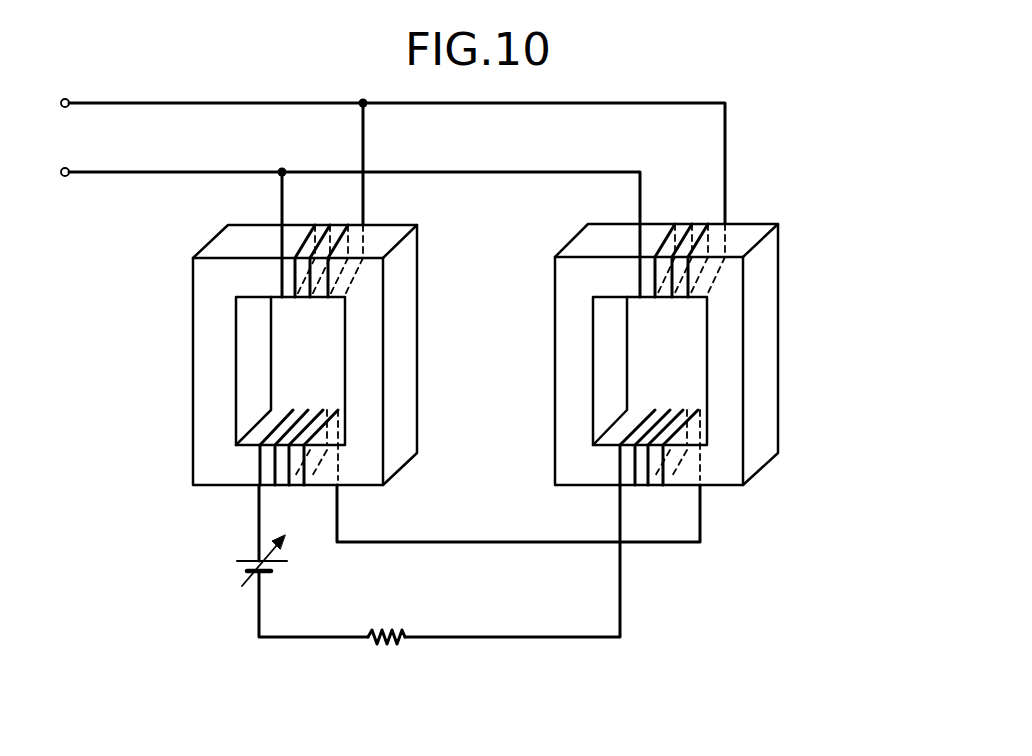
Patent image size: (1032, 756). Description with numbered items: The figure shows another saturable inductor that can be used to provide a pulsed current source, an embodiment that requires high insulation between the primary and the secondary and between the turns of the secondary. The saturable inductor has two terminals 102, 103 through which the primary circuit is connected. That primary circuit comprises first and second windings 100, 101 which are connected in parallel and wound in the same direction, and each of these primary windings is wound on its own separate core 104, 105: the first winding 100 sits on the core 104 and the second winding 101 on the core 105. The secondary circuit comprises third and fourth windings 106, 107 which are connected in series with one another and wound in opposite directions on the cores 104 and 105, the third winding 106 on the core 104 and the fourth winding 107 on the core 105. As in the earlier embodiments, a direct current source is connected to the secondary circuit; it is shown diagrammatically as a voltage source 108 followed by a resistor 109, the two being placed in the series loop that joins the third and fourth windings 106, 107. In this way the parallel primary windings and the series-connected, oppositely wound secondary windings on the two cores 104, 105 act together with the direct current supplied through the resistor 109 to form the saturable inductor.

The first winding 100 is at (328, 224).
The second winding 101 is at (662, 226).
The terminal 102 is at (63, 99).
The terminal 103 is at (65, 177).
The core 104 is at (208, 358).
The core 105 is at (570, 377).
The third winding 106 is at (306, 410).
The fourth winding 107 is at (641, 410).
The voltage source 108 is at (244, 573).
The resistor 109 is at (407, 644).